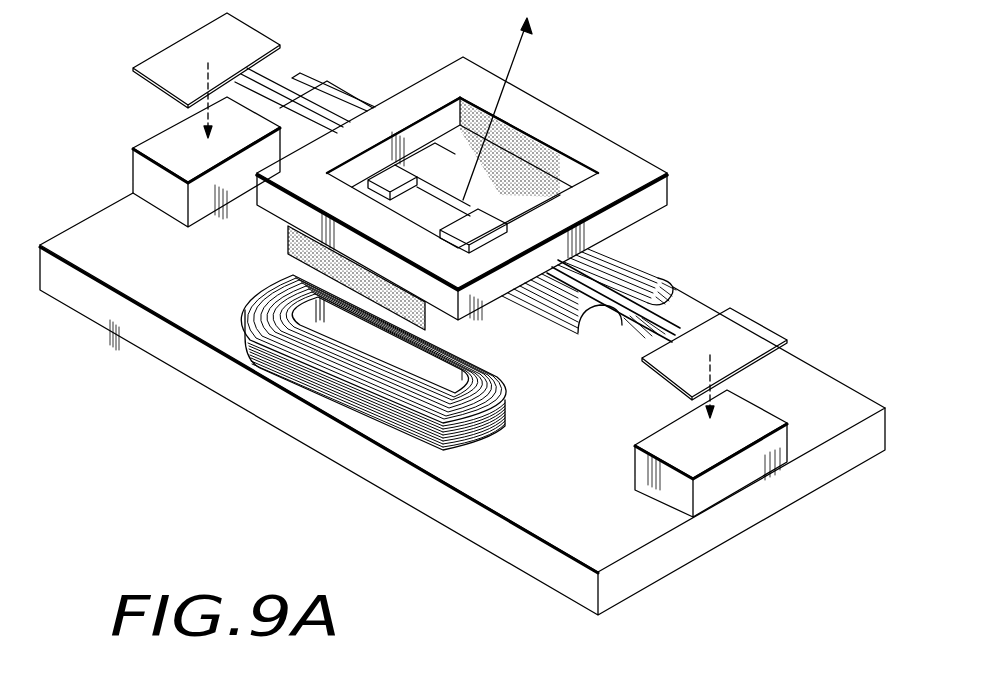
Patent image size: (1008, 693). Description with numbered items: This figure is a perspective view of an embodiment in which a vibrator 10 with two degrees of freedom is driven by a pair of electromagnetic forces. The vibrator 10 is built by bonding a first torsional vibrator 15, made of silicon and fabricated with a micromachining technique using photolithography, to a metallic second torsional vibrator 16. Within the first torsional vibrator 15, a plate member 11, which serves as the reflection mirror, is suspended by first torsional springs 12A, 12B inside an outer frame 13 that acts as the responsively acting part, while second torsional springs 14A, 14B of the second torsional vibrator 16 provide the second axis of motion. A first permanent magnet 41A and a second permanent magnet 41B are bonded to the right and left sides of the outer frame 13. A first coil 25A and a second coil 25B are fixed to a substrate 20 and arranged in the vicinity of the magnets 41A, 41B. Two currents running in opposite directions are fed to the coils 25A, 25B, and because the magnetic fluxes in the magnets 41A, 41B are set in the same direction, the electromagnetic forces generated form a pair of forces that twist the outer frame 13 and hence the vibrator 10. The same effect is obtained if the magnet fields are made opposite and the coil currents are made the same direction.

The vibrator 10 is at (603, 132).
The plate member 11 is at (495, 176).
The first torsional spring 12A is at (450, 133).
The first torsional spring 12B is at (475, 255).
The outer frame 13 is at (400, 97).
The second torsional spring 14A is at (278, 93).
The second torsional spring 14B is at (664, 284).
The first torsional vibrator 15 is at (505, 184).
The second torsional vibrator 16 is at (665, 174).
The substrate 20 is at (768, 490).
The first coil 25A is at (435, 440).
The second coil 25B is at (676, 283).
The first permanent magnet 41A is at (290, 230).
The second permanent magnet 41B is at (598, 193).